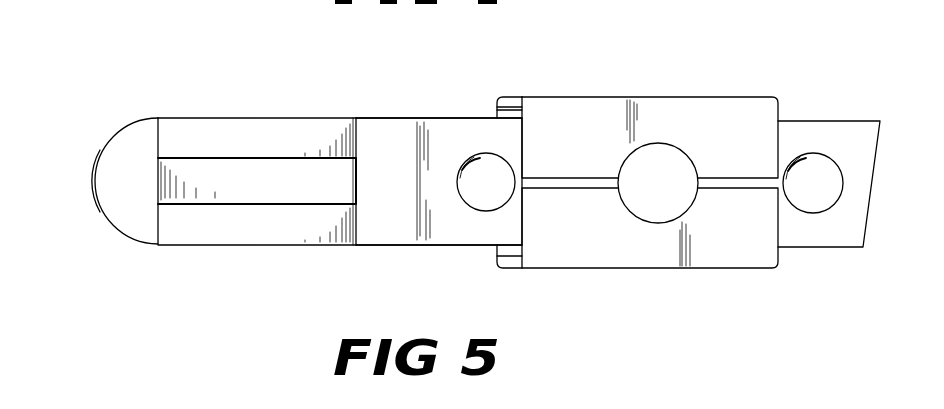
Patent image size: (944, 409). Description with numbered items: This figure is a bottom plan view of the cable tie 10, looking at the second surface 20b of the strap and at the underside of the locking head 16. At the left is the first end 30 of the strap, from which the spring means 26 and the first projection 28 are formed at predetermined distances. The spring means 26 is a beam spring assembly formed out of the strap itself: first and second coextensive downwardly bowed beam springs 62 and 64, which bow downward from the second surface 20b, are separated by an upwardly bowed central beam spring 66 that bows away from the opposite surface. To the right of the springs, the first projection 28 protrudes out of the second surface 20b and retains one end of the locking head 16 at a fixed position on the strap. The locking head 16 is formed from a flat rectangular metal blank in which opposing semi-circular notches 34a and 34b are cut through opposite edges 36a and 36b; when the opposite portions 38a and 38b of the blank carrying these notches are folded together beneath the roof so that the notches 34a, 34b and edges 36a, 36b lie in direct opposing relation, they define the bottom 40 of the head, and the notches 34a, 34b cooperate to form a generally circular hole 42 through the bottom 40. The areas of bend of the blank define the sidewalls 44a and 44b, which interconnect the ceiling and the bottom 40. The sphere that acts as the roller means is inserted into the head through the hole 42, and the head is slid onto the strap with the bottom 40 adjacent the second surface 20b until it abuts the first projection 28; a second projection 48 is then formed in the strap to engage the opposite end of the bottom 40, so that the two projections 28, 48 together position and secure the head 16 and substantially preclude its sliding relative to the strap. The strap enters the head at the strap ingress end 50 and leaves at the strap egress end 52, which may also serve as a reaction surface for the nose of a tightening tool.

The cable tie 10 is at (607, 44).
The locking head 16 is at (680, 177).
The second surface 20b is at (383, 142).
The spring means 26 is at (188, 74).
The first projection 28 is at (500, 193).
The first end 30 is at (97, 178).
The semi-circular notch 34a is at (662, 152).
The semi-circular notch 34b is at (656, 217).
The edge 36a is at (600, 178).
The edge 36b is at (538, 190).
The opposite portion 38a is at (757, 117).
The opposite portion 38b is at (757, 253).
The bottom 40 is at (648, 116).
The circular hole 42 is at (670, 193).
The sidewall 44a is at (510, 97).
The sidewall 44b is at (510, 261).
The second projection 48 is at (823, 193).
The strap ingress end 50 is at (497, 110).
The strap egress end 52 is at (778, 108).
The first beam spring 62 is at (230, 128).
The second beam spring 64 is at (243, 228).
The central beam spring 66 is at (257, 190).